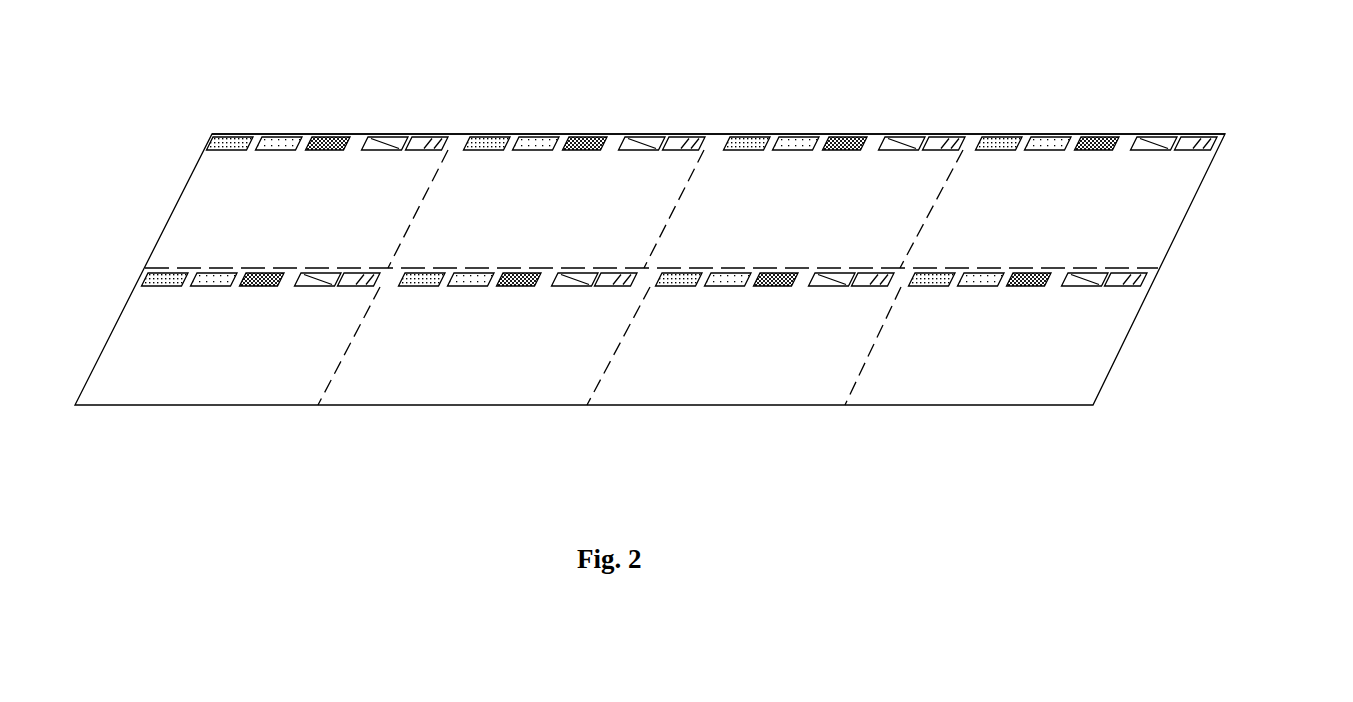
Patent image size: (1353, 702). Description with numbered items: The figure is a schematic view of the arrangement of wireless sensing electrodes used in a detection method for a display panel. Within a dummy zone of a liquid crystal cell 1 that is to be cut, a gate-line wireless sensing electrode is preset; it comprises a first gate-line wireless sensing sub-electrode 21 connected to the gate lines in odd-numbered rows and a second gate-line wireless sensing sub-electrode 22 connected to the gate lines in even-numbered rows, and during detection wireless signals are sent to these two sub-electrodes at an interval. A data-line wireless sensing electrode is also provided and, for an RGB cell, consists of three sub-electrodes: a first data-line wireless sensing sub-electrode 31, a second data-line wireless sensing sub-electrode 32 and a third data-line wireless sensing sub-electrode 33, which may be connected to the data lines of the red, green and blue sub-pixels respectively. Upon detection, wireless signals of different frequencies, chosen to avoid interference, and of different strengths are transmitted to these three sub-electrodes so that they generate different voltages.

The liquid crystal cell 1 is at (1127, 340).
The first gate-line wireless sensing sub-electrode 21 is at (775, 99).
The second gate-line wireless sensing sub-electrode 22 is at (1163, 143).
The first data-line wireless sensing sub-electrode 31 is at (1003, 140).
The second data-line wireless sensing sub-electrode 32 is at (805, 140).
The third data-line wireless sensing sub-electrode 33 is at (583, 140).